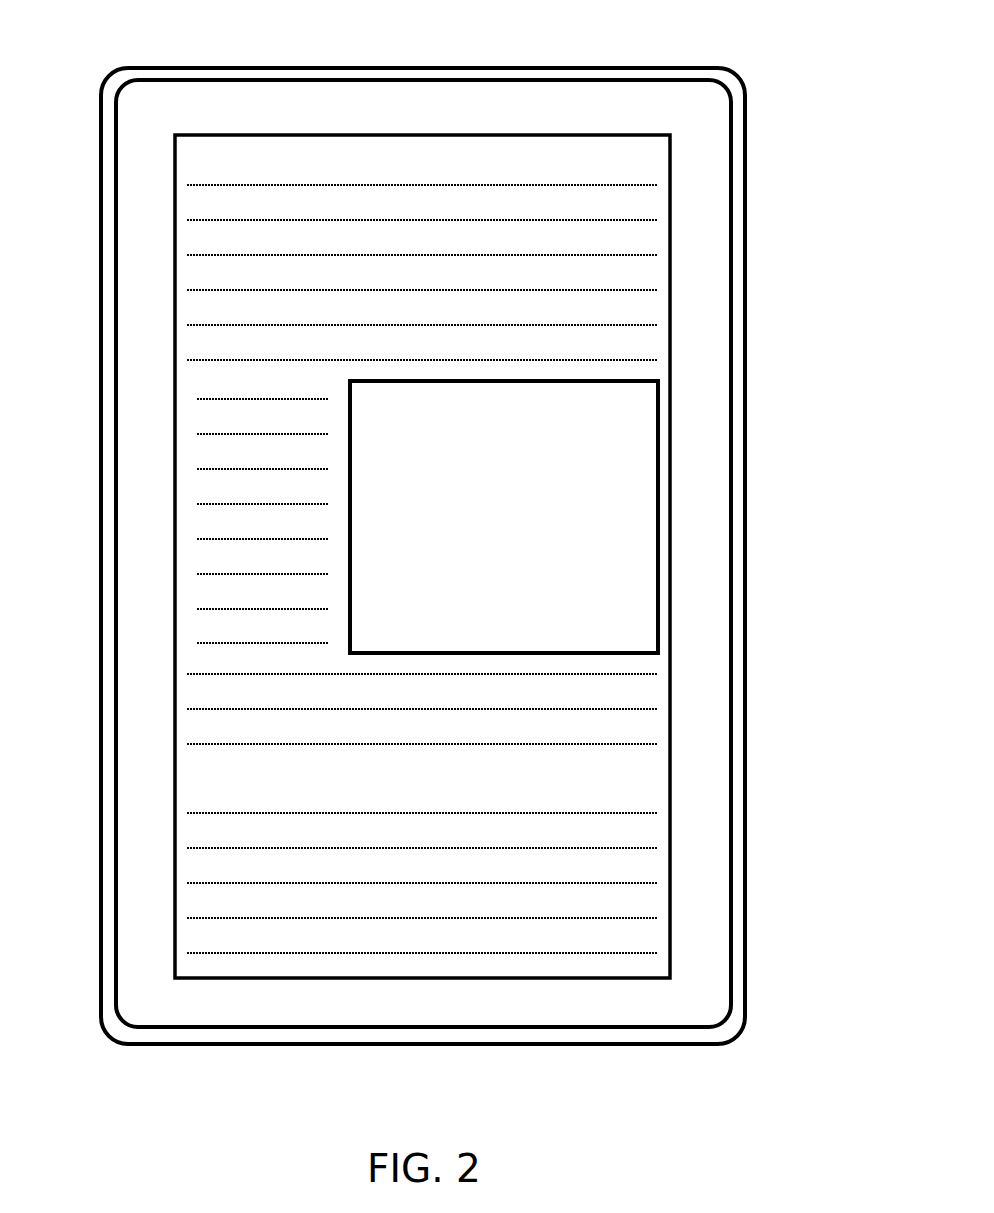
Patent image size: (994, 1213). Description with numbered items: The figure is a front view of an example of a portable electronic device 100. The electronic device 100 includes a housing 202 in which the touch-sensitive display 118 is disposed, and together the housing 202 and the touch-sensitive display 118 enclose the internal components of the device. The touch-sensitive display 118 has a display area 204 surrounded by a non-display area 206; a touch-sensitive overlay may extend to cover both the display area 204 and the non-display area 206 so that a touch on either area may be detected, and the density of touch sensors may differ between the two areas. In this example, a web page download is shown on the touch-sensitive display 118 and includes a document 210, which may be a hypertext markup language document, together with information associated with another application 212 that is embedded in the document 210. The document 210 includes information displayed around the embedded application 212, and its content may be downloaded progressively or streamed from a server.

The electronic device 100 is at (475, 548).
The touch-sensitive display 118 is at (732, 298).
The housing 202 is at (707, 65).
The display area 204 is at (407, 160).
The non-display area 206 is at (520, 112).
The document 210 is at (650, 708).
The application 212 is at (627, 532).